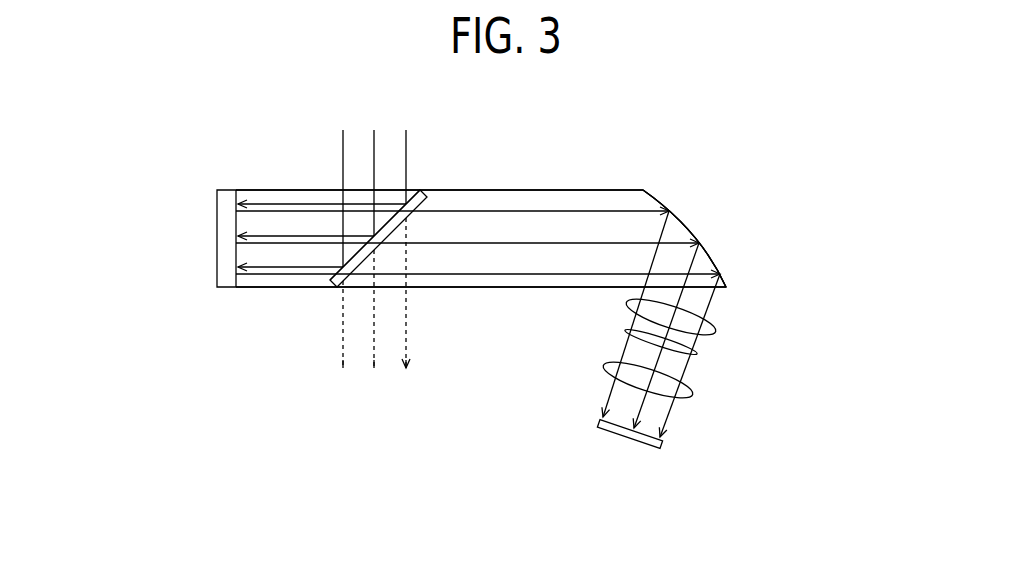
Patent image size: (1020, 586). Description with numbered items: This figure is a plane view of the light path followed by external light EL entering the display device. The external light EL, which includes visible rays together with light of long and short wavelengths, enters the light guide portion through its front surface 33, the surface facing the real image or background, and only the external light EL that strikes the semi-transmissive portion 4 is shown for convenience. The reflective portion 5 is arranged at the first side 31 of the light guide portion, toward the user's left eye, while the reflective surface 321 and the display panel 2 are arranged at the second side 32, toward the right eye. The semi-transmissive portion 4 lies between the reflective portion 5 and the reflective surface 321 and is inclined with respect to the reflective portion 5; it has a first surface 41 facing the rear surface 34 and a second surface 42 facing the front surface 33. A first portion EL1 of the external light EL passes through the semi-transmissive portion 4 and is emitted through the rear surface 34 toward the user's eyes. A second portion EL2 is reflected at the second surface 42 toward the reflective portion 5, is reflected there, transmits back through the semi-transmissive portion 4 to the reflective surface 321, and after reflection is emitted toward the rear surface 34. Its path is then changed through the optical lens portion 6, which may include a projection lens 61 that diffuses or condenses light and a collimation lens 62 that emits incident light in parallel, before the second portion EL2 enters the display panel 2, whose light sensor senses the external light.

The first side 31 is at (219, 165).
The reflective portion 5 is at (217, 230).
The front surface 33 is at (541, 189).
The rear surface 34 is at (575, 288).
The second side 32 is at (681, 184).
The reflective surface 321 is at (688, 225).
The semi-transmissive portion 4 is at (411, 185).
The first surface 41 is at (430, 205).
The second surface 42 is at (381, 200).
The external light EL is at (322, 188).
The first portion of the external light EL1 is at (410, 370).
The second portion of the external light EL2 is at (602, 369).
The optical lens portion 6 is at (702, 350).
The projection lens 61 is at (731, 323).
The collimation lens 62 is at (774, 337).
The display panel 2 is at (640, 447).